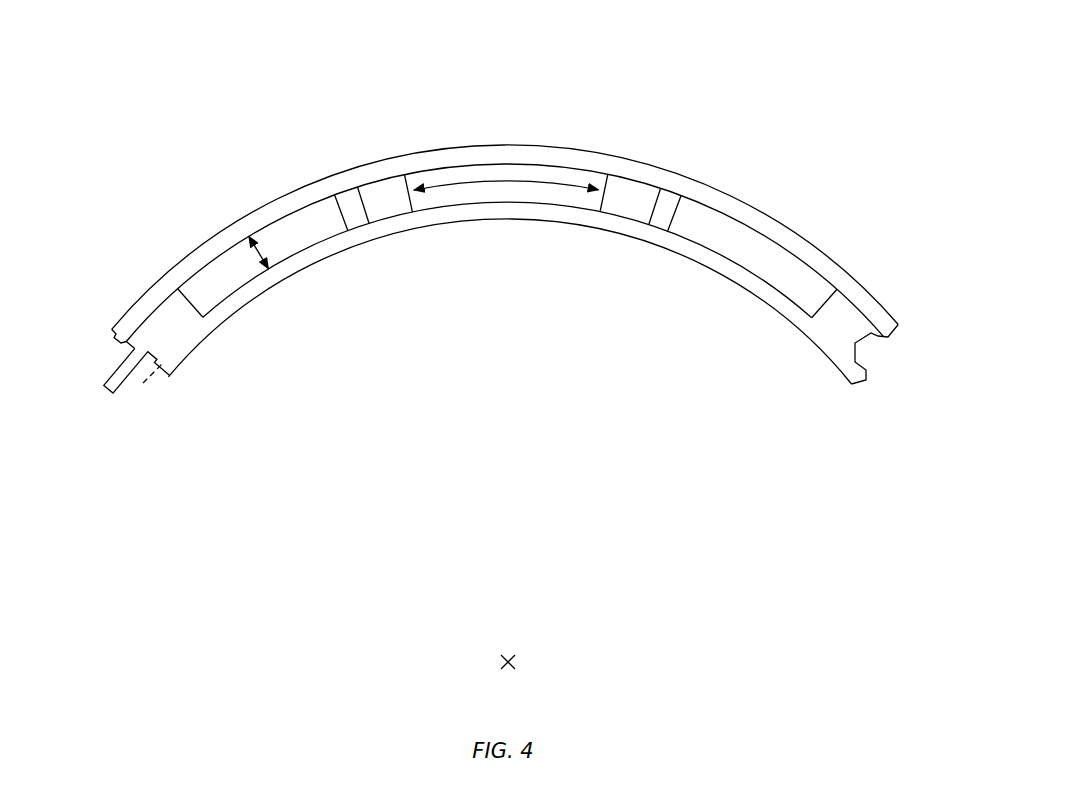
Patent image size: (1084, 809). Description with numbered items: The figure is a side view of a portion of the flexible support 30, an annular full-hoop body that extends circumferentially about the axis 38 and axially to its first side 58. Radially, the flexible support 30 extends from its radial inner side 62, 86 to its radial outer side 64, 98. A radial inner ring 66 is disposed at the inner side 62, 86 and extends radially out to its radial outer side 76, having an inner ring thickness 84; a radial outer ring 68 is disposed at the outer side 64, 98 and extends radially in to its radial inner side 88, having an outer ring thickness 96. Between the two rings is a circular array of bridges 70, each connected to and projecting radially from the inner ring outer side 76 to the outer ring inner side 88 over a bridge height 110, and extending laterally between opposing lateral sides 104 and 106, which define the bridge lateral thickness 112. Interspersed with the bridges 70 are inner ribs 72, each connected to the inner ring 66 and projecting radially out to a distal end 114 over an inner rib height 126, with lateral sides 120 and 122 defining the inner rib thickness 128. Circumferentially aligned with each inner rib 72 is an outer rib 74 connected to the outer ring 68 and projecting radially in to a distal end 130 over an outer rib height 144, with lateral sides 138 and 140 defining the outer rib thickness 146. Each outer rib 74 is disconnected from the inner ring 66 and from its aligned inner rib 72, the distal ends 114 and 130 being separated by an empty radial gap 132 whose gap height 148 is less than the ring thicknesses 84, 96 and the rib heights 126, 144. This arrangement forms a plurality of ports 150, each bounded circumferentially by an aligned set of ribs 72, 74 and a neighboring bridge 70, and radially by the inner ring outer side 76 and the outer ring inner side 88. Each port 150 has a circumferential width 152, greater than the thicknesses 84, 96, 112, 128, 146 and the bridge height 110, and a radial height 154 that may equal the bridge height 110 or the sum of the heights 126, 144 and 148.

The flexible support 30 is at (836, 98).
The axis 38 is at (516, 662).
The first side of the flexible support 58 is at (873, 313).
The radial inner side of the flexible support 62 is at (509, 328).
The inner band 86 is at (826, 357).
The radial outer side of the flexible support 64 is at (894, 243).
The outer rim 98 is at (858, 283).
The radial inner ring 66 is at (742, 330).
The radial outer ring 68 is at (822, 232).
The bridge 70 is at (882, 378).
The inner rib 72 is at (212, 300).
The outer rib 74 is at (180, 300).
The radial outer side of the inner ring 76 is at (884, 372).
The inner ring thickness 84 is at (274, 290).
The radial inner side of the outer ring 88 is at (870, 347).
The outer ring thickness 96 is at (243, 214).
The lateral side of the bridge 104 is at (437, 205).
The lateral side of the bridge 106 is at (352, 225).
The bridge height 110 is at (310, 220).
The bridge lateral thickness 112 is at (402, 170).
The radial outer distal end of the inner rib 114 is at (140, 322).
The lateral side of the inner rib 120 is at (682, 228).
The lateral side of the inner rib 122 is at (580, 200).
The inner rib height 126 is at (92, 398).
The inner rib lateral thickness 128 is at (600, 212).
The radial inner distal end of the outer rib 130 is at (172, 357).
The radial gap 132 is at (193, 285).
The lateral side of the outer rib 138 is at (686, 188).
The lateral side of the outer rib 140 is at (606, 180).
The outer rib height 144 is at (97, 362).
The outer rib lateral thickness 146 is at (661, 188).
The gap height 148 is at (213, 370).
The port 150 is at (473, 165).
The port circumferential width 152 is at (500, 145).
The port radial height 154 is at (748, 314).